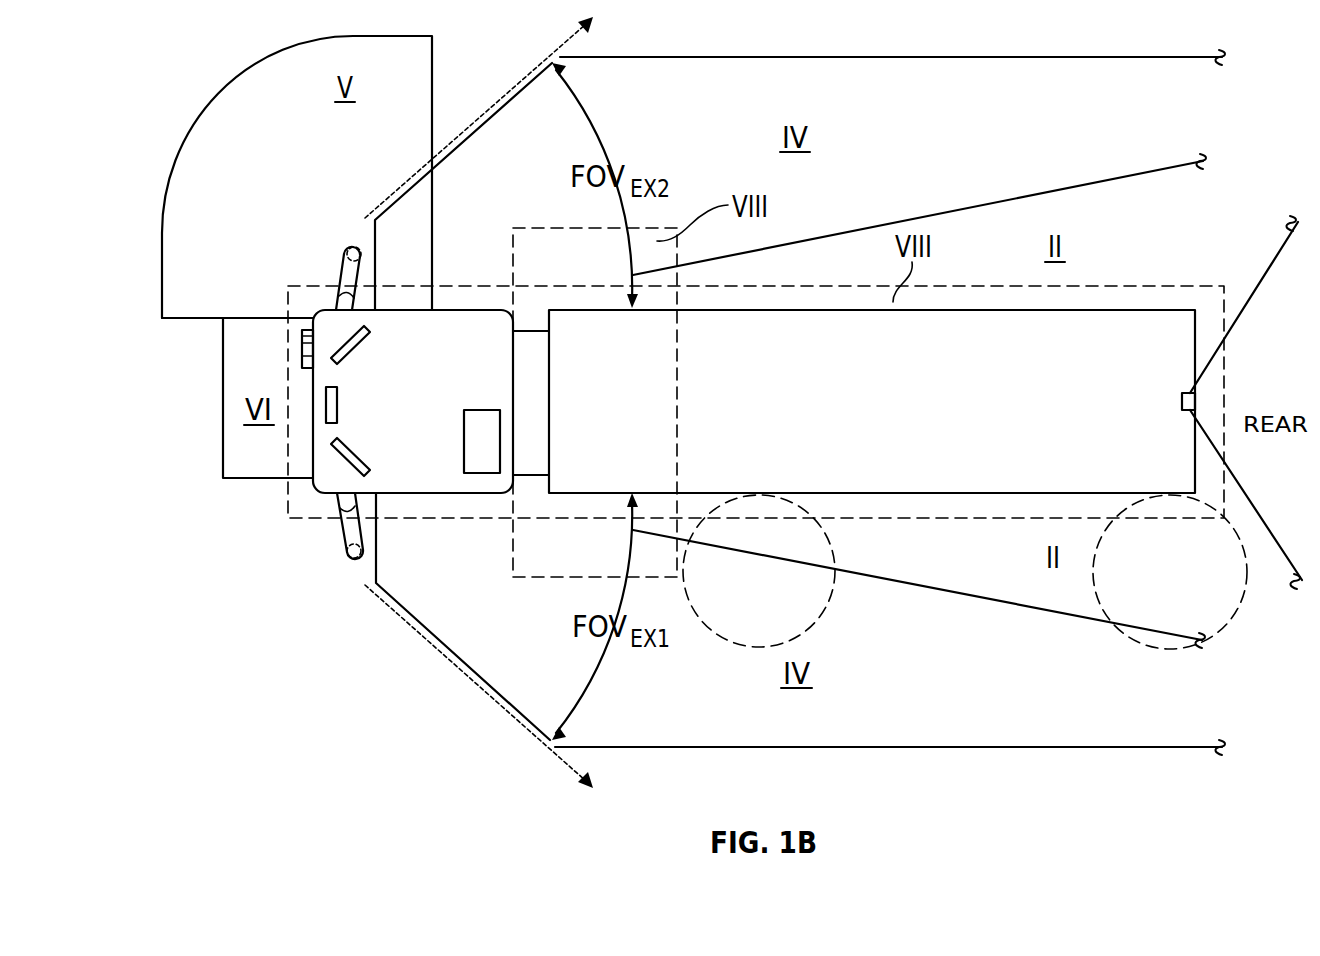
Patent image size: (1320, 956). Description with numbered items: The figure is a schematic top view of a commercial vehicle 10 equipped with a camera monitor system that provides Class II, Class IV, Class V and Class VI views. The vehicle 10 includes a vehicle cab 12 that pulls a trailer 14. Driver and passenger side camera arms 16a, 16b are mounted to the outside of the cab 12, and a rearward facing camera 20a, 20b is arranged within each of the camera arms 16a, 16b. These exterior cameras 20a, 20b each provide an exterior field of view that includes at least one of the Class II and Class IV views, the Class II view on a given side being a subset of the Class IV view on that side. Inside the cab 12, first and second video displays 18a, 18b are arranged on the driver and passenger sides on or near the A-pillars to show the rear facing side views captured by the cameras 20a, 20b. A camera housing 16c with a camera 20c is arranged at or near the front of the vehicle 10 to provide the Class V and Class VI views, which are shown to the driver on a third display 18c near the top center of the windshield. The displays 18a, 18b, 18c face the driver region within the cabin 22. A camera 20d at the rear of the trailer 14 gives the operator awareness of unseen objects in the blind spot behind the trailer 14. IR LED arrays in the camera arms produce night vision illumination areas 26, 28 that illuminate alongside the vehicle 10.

The commercial vehicle 10 is at (286, 290).
The vehicle cab 12 is at (305, 497).
The trailer 14 is at (1140, 298).
The driver side camera arm 16a is at (340, 537).
The passenger side camera arm 16b is at (340, 270).
The camera housing 16c is at (300, 354).
The first video display 18a is at (357, 453).
The second video display 18b is at (355, 343).
The third display 18c is at (324, 398).
The rearward facing camera 20a is at (360, 553).
The rearward facing camera 20b is at (350, 246).
The camera 20c is at (302, 342).
The camera 20d is at (1197, 402).
The cabin 22 is at (442, 322).
The IR LED illumination area 26 is at (838, 618).
The night vision illumination area 28 is at (1240, 635).